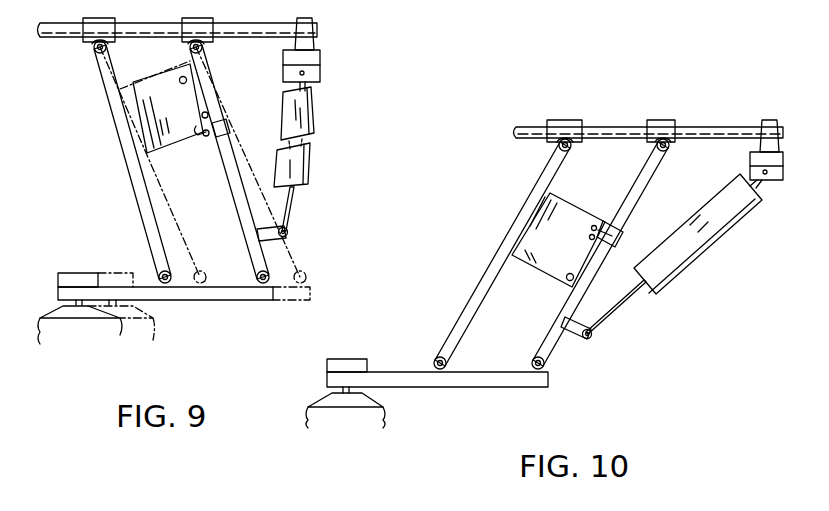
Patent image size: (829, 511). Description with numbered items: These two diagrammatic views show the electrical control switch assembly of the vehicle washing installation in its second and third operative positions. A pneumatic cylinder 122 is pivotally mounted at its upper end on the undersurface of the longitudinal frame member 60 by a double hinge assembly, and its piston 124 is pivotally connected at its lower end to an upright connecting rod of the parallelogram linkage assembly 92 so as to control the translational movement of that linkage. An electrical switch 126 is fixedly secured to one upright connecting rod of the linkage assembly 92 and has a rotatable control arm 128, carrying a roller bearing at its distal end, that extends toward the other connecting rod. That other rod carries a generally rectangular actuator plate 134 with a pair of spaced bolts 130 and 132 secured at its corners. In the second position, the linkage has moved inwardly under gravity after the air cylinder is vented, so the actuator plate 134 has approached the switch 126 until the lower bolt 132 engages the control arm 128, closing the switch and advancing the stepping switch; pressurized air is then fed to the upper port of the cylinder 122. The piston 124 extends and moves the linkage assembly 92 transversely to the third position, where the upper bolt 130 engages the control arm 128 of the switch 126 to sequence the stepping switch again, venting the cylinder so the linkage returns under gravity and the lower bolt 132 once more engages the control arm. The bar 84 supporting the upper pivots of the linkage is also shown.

In FIG. 9, the support bar 84 is at (256, 25).
In FIG. 10, the support bar 84 is at (724, 128).
In FIG. 9, the longitudinal frame member 60 is at (318, 57).
In FIG. 10, the longitudinal frame member 60 is at (783, 157).
In FIG. 9, the pneumatic cylinder 122 is at (312, 117).
In FIG. 10, the pneumatic cylinder 122 is at (730, 225).
In FIG. 9, the piston 124 is at (289, 227).
In FIG. 10, the piston 124 is at (612, 308).
In FIG. 9, the electrical switch 126 is at (228, 122).
In FIG. 10, the electrical switch 126 is at (623, 233).
In FIG. 9, the control arm 128 is at (207, 137).
In FIG. 10, the control arm 128 is at (593, 240).
In FIG. 10, the bolt 130 is at (608, 222).
In FIG. 9, the bolt 132 is at (197, 130).
In FIG. 9, the actuator plate 134 is at (178, 113).
In FIG. 10, the actuator plate 134 is at (572, 241).
In FIG. 9, the parallelogram linkage assembly 92 is at (118, 143).
In FIG. 10, the parallelogram linkage assembly 92 is at (490, 265).